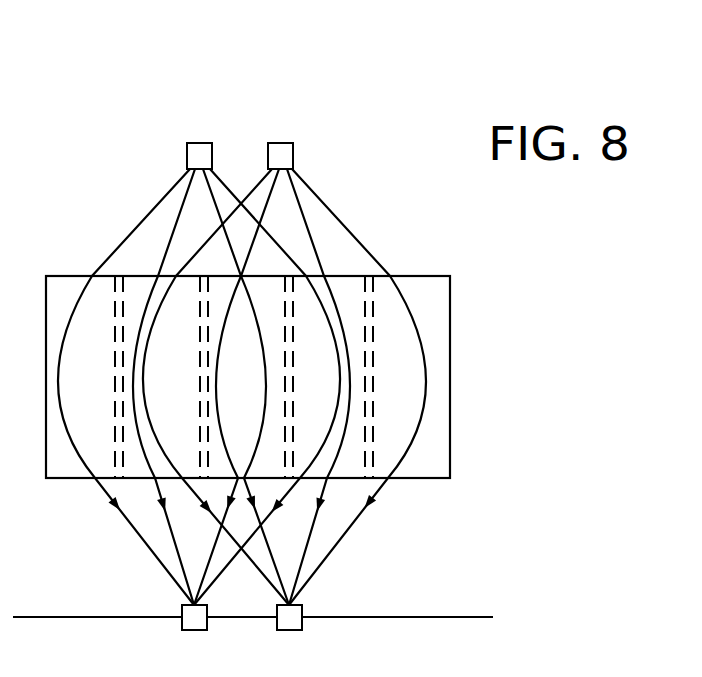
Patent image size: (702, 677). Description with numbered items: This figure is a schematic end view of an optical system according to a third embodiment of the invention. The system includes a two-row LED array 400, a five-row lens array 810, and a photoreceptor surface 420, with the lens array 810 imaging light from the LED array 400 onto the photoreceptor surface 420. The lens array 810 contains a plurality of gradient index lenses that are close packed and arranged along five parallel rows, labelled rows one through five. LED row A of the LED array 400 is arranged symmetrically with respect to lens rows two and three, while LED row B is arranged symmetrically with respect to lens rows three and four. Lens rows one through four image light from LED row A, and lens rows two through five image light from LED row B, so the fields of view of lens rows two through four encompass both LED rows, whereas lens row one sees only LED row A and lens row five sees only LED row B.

The two-row LED array 400 is at (183, 68).
The five-row lens array 810 is at (450, 310).
The photoreceptor surface 420 is at (415, 617).